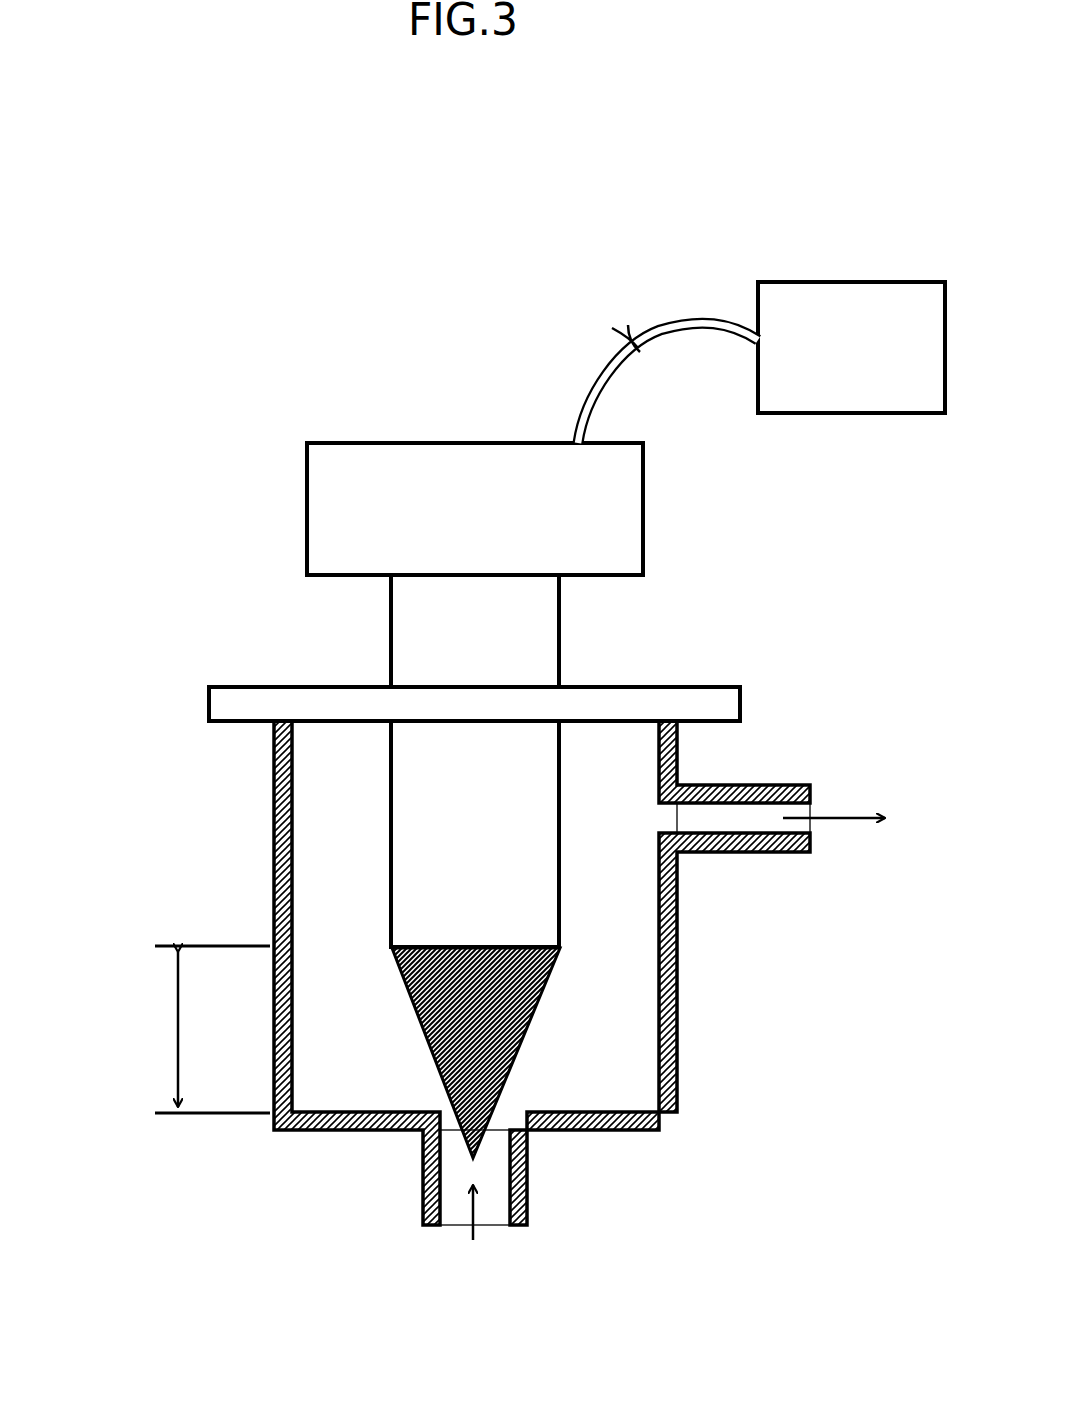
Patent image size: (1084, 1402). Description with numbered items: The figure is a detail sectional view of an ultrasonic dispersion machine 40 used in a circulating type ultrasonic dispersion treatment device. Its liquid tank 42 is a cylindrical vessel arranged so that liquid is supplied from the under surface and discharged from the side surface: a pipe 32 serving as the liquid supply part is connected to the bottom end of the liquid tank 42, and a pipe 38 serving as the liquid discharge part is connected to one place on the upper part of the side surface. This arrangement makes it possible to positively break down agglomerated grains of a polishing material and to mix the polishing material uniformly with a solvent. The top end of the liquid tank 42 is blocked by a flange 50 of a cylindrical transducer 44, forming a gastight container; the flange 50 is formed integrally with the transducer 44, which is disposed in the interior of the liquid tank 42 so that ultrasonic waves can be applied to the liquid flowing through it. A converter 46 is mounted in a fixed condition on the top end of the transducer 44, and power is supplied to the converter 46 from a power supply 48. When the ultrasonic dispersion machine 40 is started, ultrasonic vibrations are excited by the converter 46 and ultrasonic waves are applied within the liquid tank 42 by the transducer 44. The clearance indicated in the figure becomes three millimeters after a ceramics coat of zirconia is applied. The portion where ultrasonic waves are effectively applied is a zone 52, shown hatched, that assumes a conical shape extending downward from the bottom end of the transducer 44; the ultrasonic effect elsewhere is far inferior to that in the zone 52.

The pipe (liquid supply part) 32 is at (527, 1178).
The pipe (liquid discharge part) 38 is at (785, 783).
The ultrasonic dispersion machine 40 is at (522, 190).
The liquid tank 42 is at (647, 920).
The transducer 44 is at (390, 792).
The converter 46 is at (307, 485).
The power supply 48 is at (857, 414).
The flange 50 is at (702, 685).
The zone 52 is at (517, 1033).